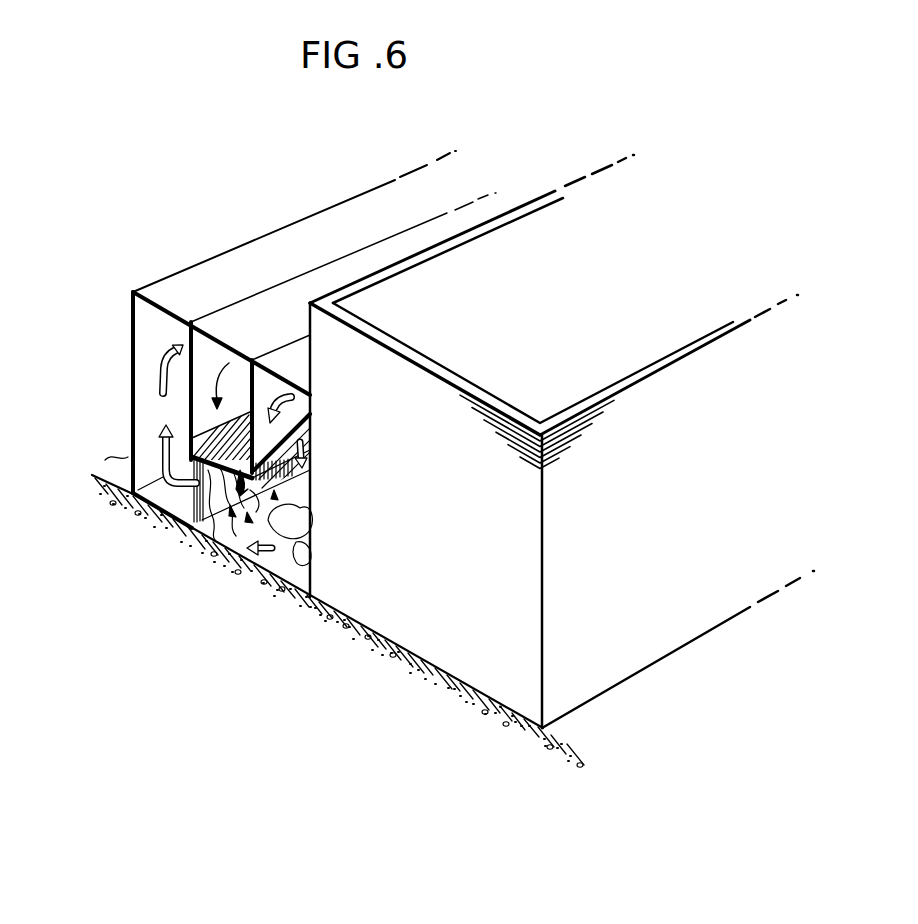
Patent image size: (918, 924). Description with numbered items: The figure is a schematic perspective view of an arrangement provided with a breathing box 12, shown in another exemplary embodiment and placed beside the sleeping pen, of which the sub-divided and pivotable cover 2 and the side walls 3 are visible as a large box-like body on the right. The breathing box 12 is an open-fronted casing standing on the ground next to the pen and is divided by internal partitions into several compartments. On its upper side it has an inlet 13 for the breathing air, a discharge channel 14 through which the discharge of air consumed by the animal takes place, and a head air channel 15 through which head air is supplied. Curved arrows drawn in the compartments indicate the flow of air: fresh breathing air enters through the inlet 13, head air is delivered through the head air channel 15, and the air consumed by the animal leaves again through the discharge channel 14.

The cover 2 is at (612, 375).
The side walls 3 is at (366, 272).
The breathing box 12 is at (117, 352).
The inlet 13 is at (219, 347).
The discharge channel 14 is at (148, 407).
The head air channel 15 is at (268, 382).